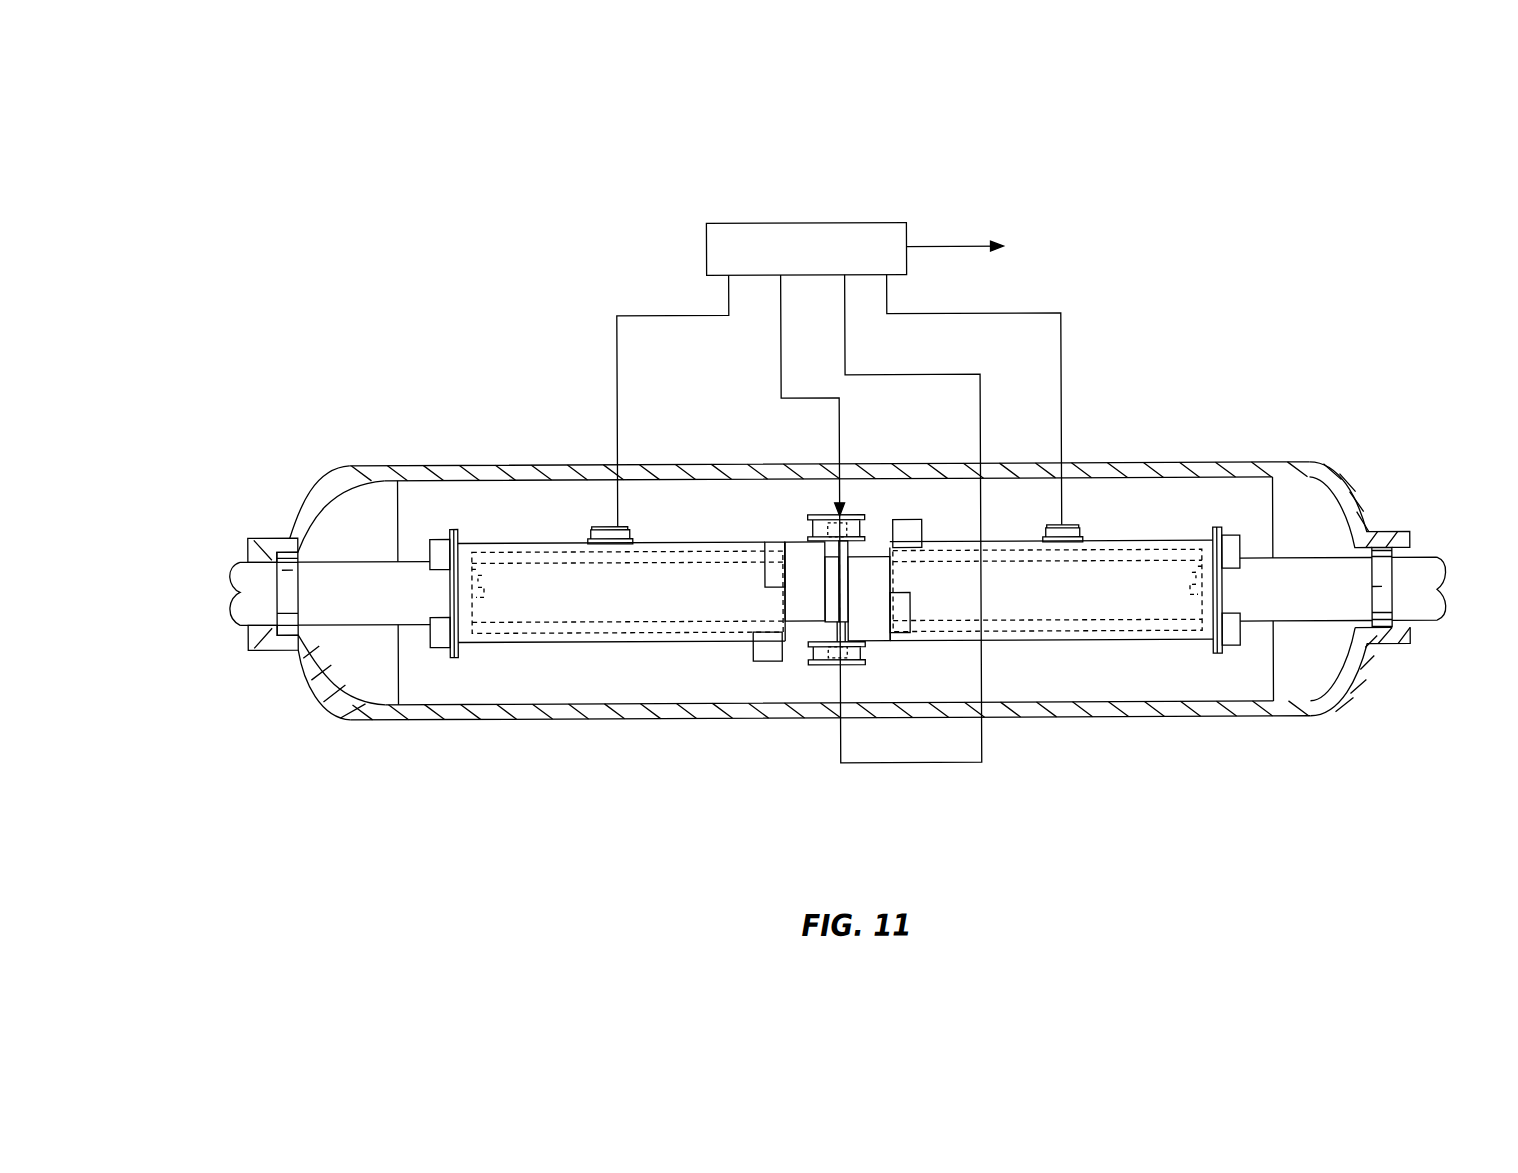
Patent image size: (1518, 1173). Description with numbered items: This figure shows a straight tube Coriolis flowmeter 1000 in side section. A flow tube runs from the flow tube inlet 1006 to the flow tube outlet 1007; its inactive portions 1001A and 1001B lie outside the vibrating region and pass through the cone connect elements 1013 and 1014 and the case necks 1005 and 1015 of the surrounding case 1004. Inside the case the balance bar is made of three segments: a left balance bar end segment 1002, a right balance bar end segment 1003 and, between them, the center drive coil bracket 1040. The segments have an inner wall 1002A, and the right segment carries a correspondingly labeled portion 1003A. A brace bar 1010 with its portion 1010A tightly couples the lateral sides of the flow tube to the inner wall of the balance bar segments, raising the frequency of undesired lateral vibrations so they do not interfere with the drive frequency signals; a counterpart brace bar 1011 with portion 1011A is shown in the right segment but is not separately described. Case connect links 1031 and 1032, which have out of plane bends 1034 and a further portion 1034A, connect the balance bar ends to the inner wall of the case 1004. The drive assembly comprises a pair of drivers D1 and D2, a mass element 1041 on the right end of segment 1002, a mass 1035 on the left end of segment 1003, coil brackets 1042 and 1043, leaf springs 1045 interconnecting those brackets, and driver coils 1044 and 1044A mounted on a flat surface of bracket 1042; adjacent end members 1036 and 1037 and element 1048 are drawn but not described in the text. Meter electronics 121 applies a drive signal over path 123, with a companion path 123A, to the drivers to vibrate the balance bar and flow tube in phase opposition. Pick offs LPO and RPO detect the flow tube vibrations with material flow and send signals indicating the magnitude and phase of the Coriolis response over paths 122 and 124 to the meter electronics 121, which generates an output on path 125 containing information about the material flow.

The meter electronics 121 is at (762, 223).
The path 122 is at (650, 315).
The path 123 is at (782, 360).
The driver lead 123A is at (846, 348).
The path 124 is at (1022, 314).
The path 125 is at (950, 247).
The Coriolis flowmeter 1000 is at (1312, 302).
The inactive portion of flow tube 1001A is at (360, 608).
The inactive portion of flow tube 1001B is at (1312, 457).
The balance bar end segment 1002 is at (668, 580).
The inner wall 1002A is at (578, 636).
The balance bar end segment 1003 is at (1020, 575).
The right flow tube interior 1003A is at (1050, 633).
The case 1004 is at (515, 464).
The case neck 1005 is at (275, 535).
The flow tube inlet 1006 is at (230, 595).
The flow tube outlet 1007 is at (1445, 608).
The brace bar 1010 is at (488, 572).
The left balance bar slot 1010A is at (500, 596).
The right balance bar 1011 is at (1188, 565).
The right balance bar slot 1011A is at (1185, 592).
The cone connect element 1013 is at (287, 600).
The cone connect element 1014 is at (1388, 570).
The case neck 1015 is at (1400, 534).
The case connect link 1031 is at (453, 528).
The case connect link 1032 is at (1218, 528).
The out of plane bend 1034 is at (440, 638).
The conduit portion 1034A is at (449, 587).
The mass 1035 is at (922, 528).
The left end cap 1036 is at (785, 603).
The right end cap 1037 is at (890, 578).
The center drive coil bracket 1040 is at (866, 462).
The mass element 1041 is at (763, 647).
The drive coil bracket 1042 is at (795, 547).
The drive coil bracket 1043 is at (878, 632).
The driver coil 1044 is at (797, 547).
The driver coil 1044A is at (830, 703).
The leaf spring 1045 is at (843, 573).
The driver plate 1048 is at (827, 600).
The driver D1 is at (828, 516).
The driver D2 is at (848, 667).
The left pick off LPO is at (610, 526).
The right pick off RPO is at (1065, 526).